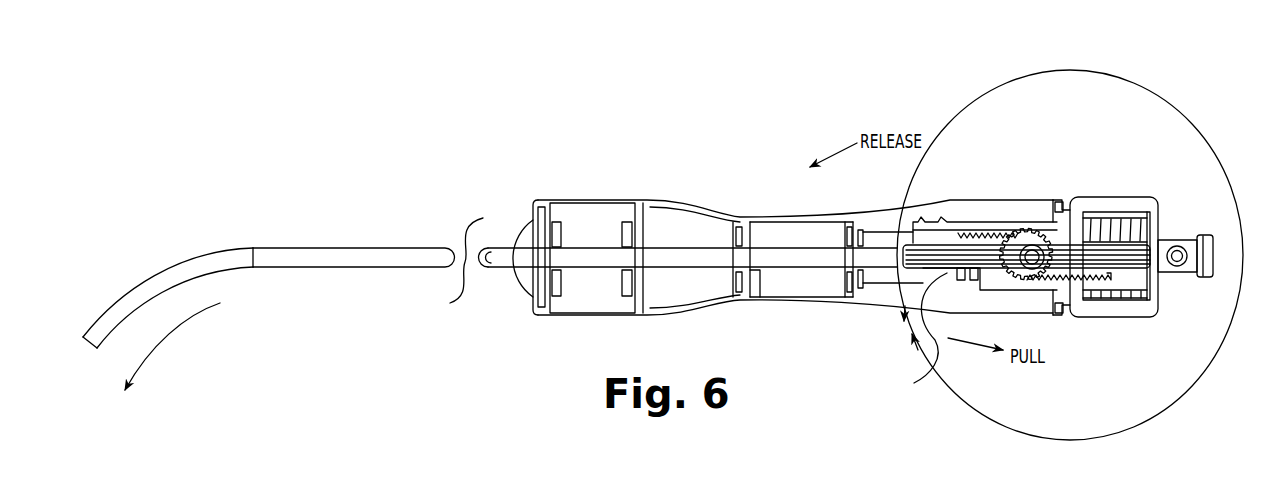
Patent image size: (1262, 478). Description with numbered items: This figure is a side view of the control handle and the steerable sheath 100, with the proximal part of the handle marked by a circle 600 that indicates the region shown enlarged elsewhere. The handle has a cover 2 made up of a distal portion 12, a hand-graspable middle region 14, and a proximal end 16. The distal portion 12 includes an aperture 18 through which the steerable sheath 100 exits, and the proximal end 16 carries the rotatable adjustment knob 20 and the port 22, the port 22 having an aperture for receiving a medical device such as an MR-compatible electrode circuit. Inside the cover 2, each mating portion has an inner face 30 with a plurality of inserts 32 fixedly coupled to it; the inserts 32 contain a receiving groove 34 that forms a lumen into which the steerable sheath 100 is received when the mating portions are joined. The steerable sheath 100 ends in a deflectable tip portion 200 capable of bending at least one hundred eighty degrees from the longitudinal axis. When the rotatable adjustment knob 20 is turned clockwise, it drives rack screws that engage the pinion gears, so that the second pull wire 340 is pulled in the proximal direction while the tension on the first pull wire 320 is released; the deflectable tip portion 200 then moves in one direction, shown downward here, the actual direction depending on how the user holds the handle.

The cover 2 is at (648, 192).
The distal portion 12 is at (530, 198).
The hand-graspable middle region 14 is at (740, 222).
The proximal end 16 is at (1077, 185).
The aperture 18 is at (508, 245).
The rotatable adjustment knob 20 is at (1118, 195).
The port 22 is at (1205, 235).
The inner face 30 is at (582, 213).
The inserts 32 is at (757, 282).
The receiving groove 34 is at (763, 218).
The steerable sheath 100 is at (310, 225).
The deflectable tip portion 200 is at (105, 312).
The first pull wire 320 is at (912, 234).
The second pull wire 340 is at (914, 383).
The enlarged view region 600 is at (1165, 406).